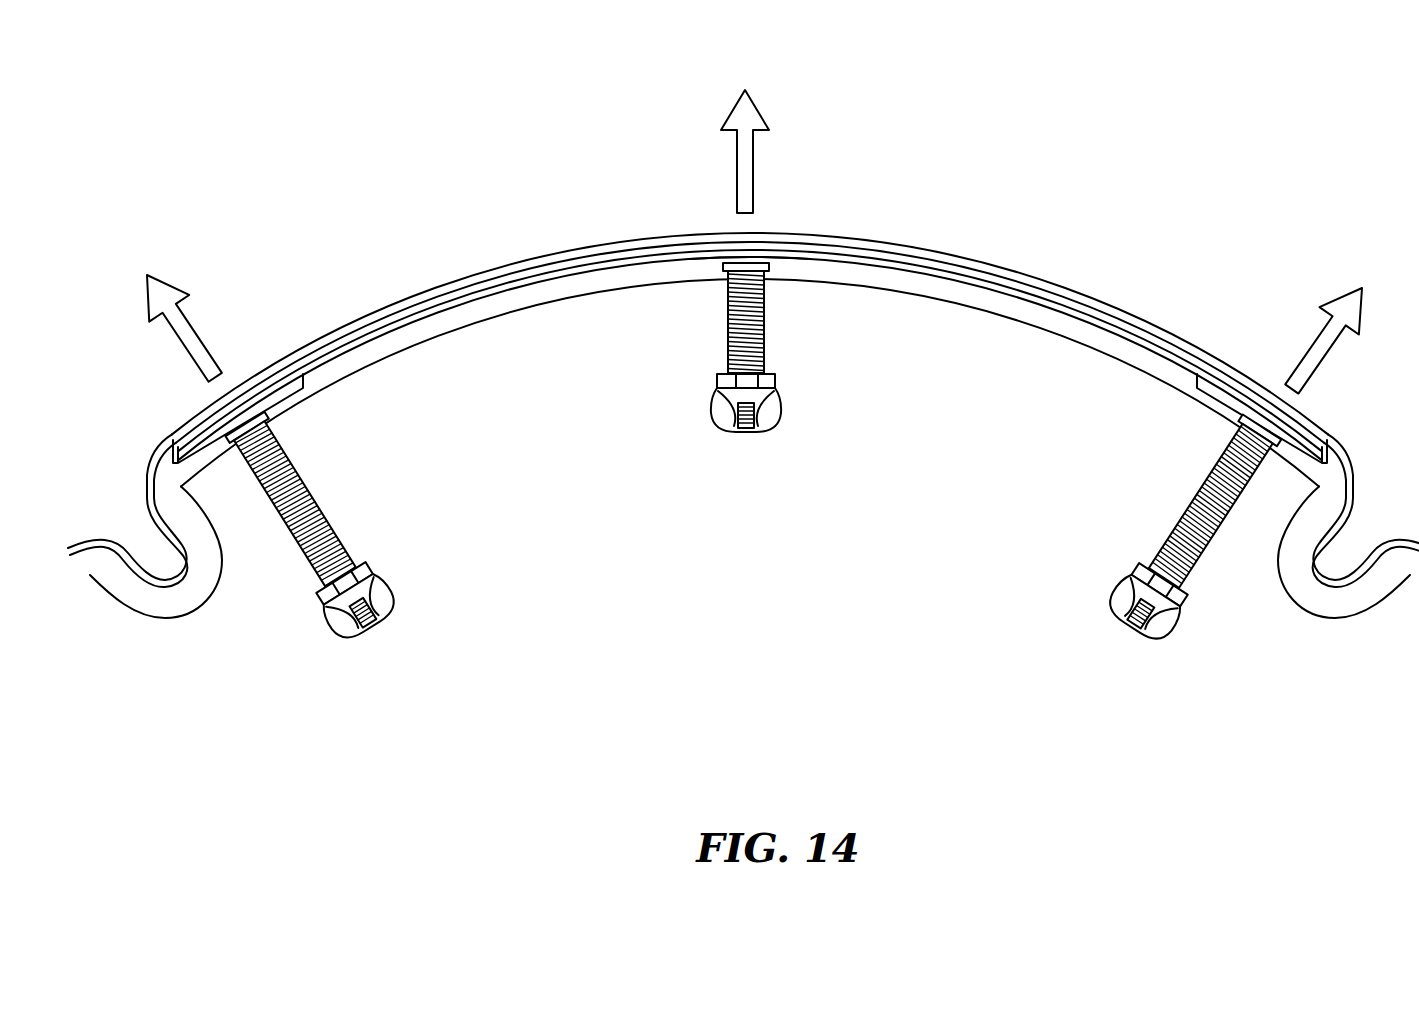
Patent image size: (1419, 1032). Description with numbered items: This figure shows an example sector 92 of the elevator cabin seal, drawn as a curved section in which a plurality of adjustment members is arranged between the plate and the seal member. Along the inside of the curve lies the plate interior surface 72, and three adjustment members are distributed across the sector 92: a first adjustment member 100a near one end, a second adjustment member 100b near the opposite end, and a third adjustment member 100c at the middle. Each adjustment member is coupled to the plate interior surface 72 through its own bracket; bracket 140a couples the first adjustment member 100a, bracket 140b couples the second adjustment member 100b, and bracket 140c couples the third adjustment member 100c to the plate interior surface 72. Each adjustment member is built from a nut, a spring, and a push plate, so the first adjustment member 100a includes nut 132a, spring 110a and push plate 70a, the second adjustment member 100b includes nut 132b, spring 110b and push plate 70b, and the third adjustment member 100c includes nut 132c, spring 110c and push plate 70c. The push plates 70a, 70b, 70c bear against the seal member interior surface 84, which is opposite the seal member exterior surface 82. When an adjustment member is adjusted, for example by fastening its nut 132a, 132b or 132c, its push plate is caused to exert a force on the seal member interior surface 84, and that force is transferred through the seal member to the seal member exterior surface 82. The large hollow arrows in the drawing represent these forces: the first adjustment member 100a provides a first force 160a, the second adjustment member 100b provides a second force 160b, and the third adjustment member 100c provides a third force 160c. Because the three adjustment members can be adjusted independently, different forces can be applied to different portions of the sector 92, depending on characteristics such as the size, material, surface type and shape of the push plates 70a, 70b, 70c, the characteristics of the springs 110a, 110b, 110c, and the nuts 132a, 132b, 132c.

The plate interior surface 72 is at (413, 390).
The seal member exterior surface 82 is at (152, 460).
The seal member interior surface 84 is at (443, 315).
The sector 92 is at (1040, 268).
The push plate 70a is at (290, 388).
The push plate 70b is at (1233, 402).
The push plate 70c is at (848, 263).
The first adjustment member 100a is at (322, 566).
The second adjustment member 100b is at (1133, 512).
The third adjustment member 100c is at (744, 369).
The spring 110a is at (302, 548).
The spring 110b is at (1182, 510).
The spring 110c is at (727, 312).
The nut 132a is at (396, 598).
The nut 132b is at (1112, 588).
The nut 132c is at (722, 413).
The bracket 140a is at (333, 612).
The bracket 140b is at (1137, 568).
The bracket 140c is at (719, 383).
The first force 160a is at (172, 280).
The second force 160b is at (730, 112).
The third force 160c is at (1340, 298).